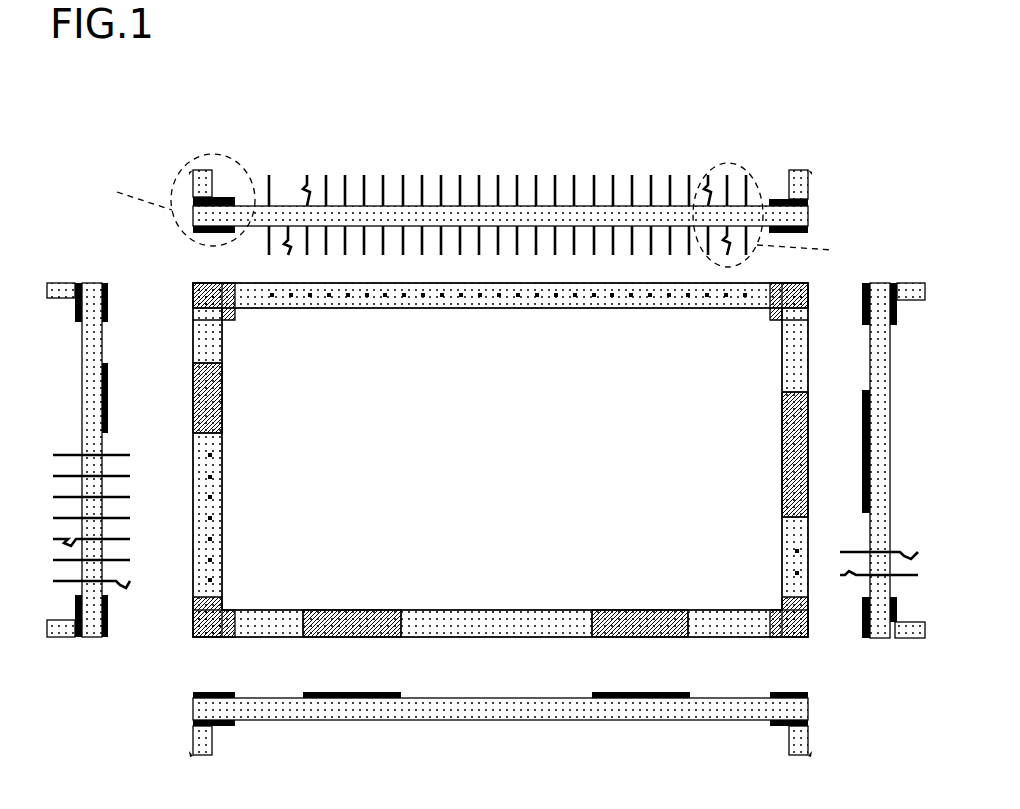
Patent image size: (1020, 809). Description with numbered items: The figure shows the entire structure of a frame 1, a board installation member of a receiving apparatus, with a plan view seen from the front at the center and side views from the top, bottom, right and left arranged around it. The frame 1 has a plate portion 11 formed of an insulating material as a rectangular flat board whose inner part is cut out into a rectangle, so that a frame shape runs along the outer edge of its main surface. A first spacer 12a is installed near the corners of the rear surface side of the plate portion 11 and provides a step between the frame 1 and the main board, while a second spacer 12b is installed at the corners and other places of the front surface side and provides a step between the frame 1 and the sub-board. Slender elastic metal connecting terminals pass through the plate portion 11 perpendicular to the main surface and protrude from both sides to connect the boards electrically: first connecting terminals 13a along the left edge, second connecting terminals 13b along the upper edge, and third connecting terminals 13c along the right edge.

The frame 1 is at (846, 116).
The plate portion 11 is at (460, 610).
The first spacer 12a is at (226, 727).
The second spacer 12b is at (222, 610).
The first connecting terminals 13a is at (115, 455).
The second connecting terminals 13b is at (462, 175).
The third connecting terminals 13c is at (797, 551).